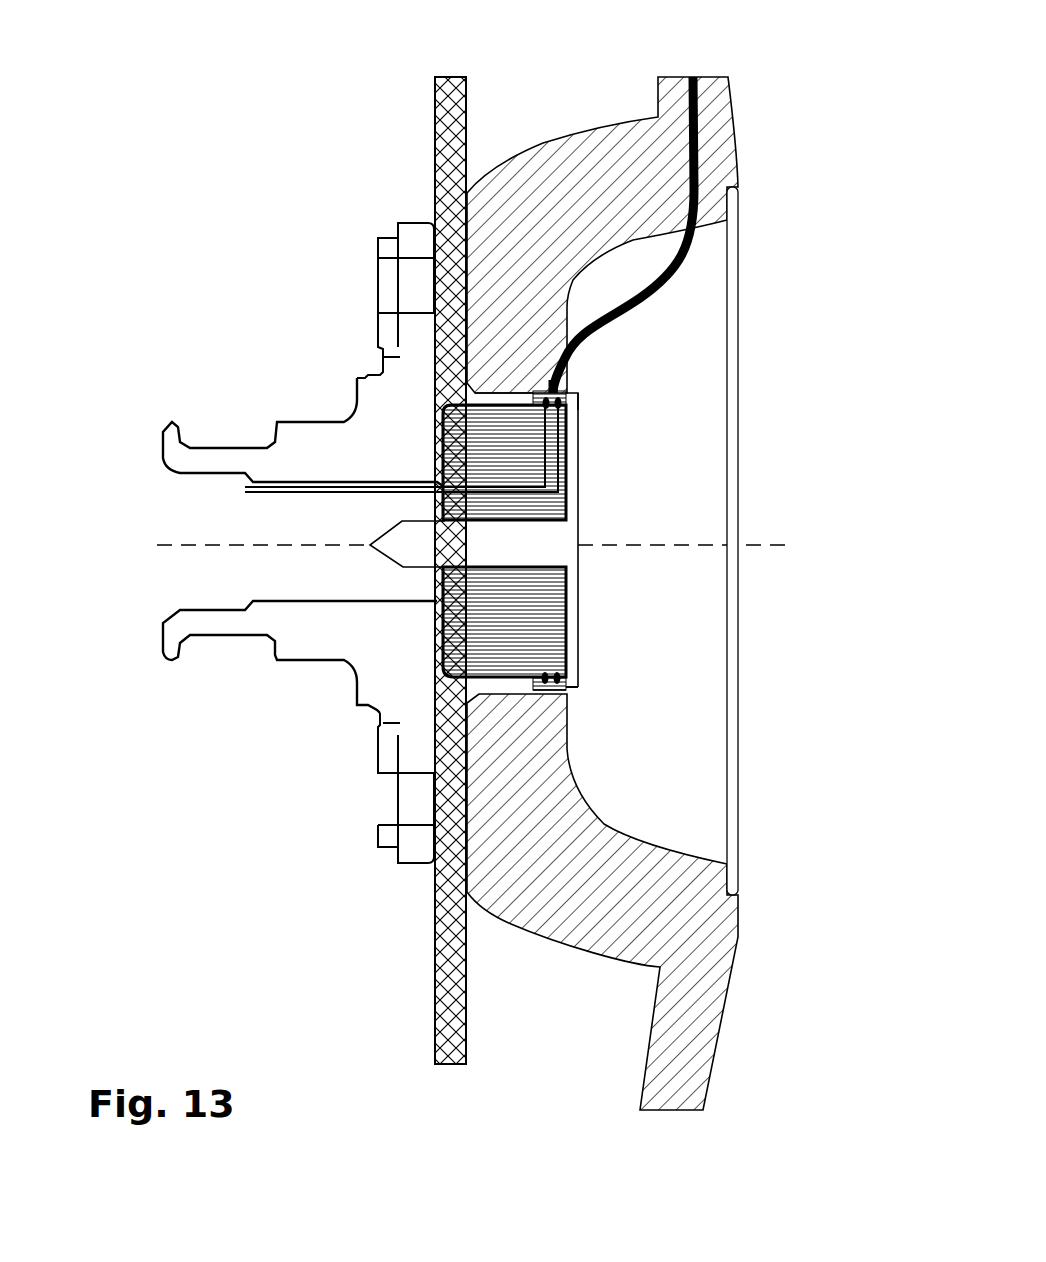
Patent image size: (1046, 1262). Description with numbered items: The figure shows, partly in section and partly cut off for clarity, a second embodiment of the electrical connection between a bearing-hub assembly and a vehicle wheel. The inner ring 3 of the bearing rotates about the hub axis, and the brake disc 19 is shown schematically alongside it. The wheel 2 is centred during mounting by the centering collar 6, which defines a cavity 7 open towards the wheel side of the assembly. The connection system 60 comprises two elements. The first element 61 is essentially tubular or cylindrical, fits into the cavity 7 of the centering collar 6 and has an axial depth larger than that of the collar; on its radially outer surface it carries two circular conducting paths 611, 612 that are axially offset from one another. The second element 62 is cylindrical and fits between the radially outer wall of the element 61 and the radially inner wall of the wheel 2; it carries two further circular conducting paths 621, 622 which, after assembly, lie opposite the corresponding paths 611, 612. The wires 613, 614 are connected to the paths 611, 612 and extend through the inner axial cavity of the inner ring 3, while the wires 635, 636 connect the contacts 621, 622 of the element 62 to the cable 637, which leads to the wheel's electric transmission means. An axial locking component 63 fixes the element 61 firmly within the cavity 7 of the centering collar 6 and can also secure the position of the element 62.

The wheel 2 is at (560, 183).
The inner ring 3 is at (332, 531).
The centering collar 6 is at (503, 397).
The cavity 7 is at (480, 447).
The brake disc 19 is at (443, 103).
The connection system 60 is at (660, 463).
The element 61 is at (538, 613).
The element 62 is at (568, 394).
The axial locking component 63 is at (545, 538).
The circular conducting path 611 is at (568, 662).
The circular conducting path 612 is at (575, 688).
The wire 613 is at (243, 486).
The wire 614 is at (310, 492).
The circular conducting path 621 is at (537, 681).
The circular conducting path 622 is at (530, 697).
The wire 635 is at (563, 397).
The wire 636 is at (567, 393).
The cable 637 is at (697, 110).